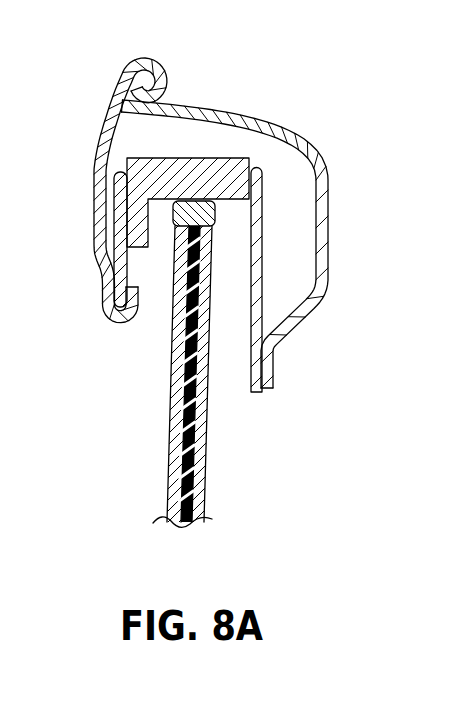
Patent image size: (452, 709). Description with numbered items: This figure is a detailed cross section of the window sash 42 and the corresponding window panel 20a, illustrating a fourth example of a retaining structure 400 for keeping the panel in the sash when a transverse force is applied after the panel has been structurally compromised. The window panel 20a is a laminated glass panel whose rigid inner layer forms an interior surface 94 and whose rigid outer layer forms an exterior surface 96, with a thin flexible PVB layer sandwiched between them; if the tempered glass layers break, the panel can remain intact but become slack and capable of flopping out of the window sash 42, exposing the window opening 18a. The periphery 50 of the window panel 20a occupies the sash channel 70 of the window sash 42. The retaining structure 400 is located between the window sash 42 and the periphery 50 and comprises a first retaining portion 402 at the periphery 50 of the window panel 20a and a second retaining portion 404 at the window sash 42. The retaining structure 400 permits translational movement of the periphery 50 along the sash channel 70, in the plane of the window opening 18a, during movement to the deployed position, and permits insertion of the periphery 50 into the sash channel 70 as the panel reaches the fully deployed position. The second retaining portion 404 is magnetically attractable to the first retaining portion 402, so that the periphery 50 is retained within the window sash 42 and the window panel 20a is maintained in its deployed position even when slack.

The window sash 42 is at (142, 66).
The retaining structure 400 is at (226, 300).
The second retaining portion 404 is at (244, 172).
The first retaining portion 402 is at (215, 218).
The sash channel 70 is at (148, 216).
The periphery 50 is at (207, 327).
The window opening 18a is at (226, 300).
The interior surface 94 is at (203, 473).
The exterior surface 96 is at (167, 478).
The window panel 20a is at (200, 502).